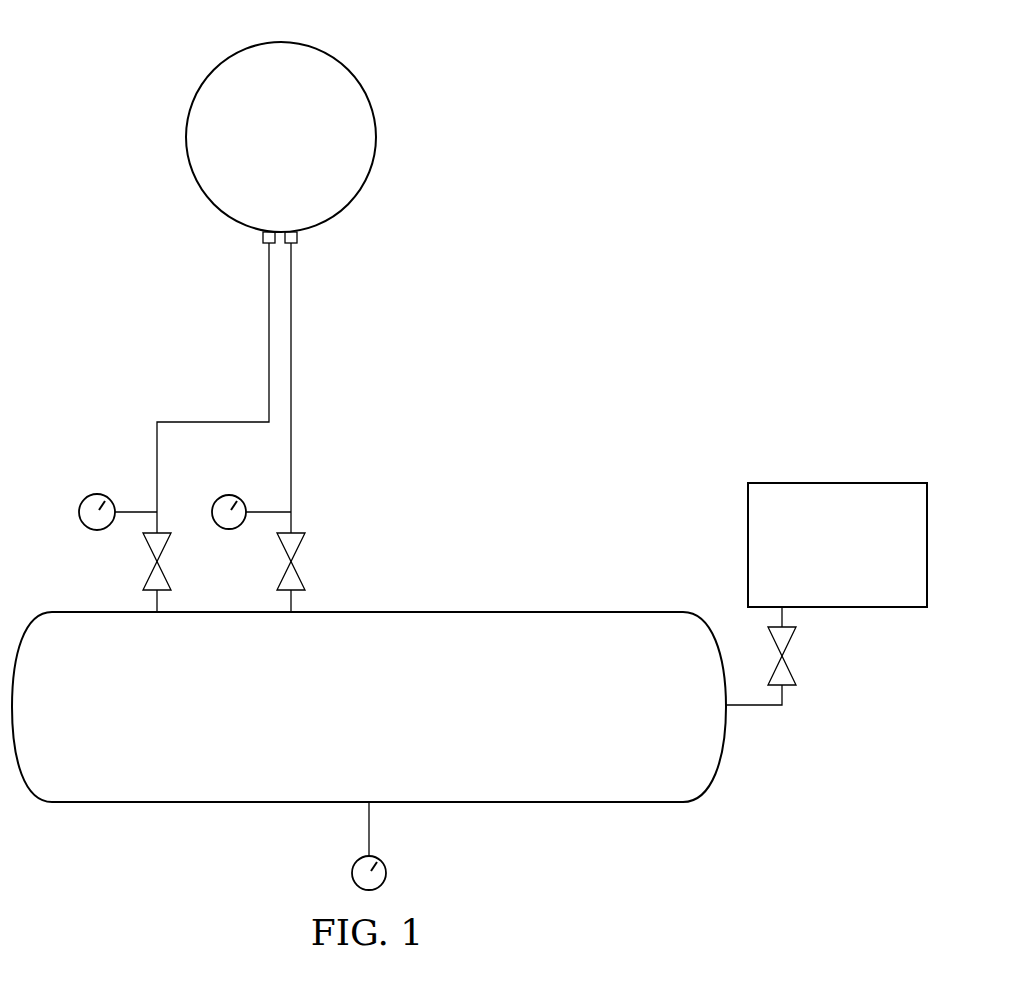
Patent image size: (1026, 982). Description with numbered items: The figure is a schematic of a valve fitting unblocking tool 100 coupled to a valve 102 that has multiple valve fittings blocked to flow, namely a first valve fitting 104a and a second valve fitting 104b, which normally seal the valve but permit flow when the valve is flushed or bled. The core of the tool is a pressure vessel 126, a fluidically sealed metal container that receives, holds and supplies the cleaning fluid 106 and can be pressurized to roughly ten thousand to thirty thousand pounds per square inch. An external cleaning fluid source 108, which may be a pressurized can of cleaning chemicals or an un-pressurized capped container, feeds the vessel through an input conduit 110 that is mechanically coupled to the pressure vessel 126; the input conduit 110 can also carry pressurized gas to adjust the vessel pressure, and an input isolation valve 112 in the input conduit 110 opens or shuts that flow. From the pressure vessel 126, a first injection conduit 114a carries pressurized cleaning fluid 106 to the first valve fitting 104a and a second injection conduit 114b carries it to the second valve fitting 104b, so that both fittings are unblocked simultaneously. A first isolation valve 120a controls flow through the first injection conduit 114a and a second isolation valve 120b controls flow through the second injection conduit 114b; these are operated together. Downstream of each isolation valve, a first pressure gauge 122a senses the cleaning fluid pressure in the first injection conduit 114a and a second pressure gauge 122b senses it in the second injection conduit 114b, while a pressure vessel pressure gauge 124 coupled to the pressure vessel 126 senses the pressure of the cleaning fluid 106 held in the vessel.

The valve fitting unblocking tool 100 is at (671, 206).
The valve 102 is at (186, 140).
The first valve fitting 104a is at (262, 237).
The second valve fitting 104b is at (298, 237).
The cleaning fluid 106 is at (348, 722).
The external cleaning fluid source 108 is at (838, 483).
The input conduit 110 is at (784, 618).
The input isolation valve 112 is at (797, 666).
The first injection conduit 114a is at (158, 491).
The second injection conduit 114b is at (292, 492).
The first isolation valve 120a is at (148, 572).
The second isolation valve 120b is at (300, 572).
The first pressure gauge 122a is at (95, 494).
The second pressure gauge 122b is at (229, 530).
The pressure vessel pressure gauge 124 is at (352, 871).
The pressure vessel 126 is at (223, 803).